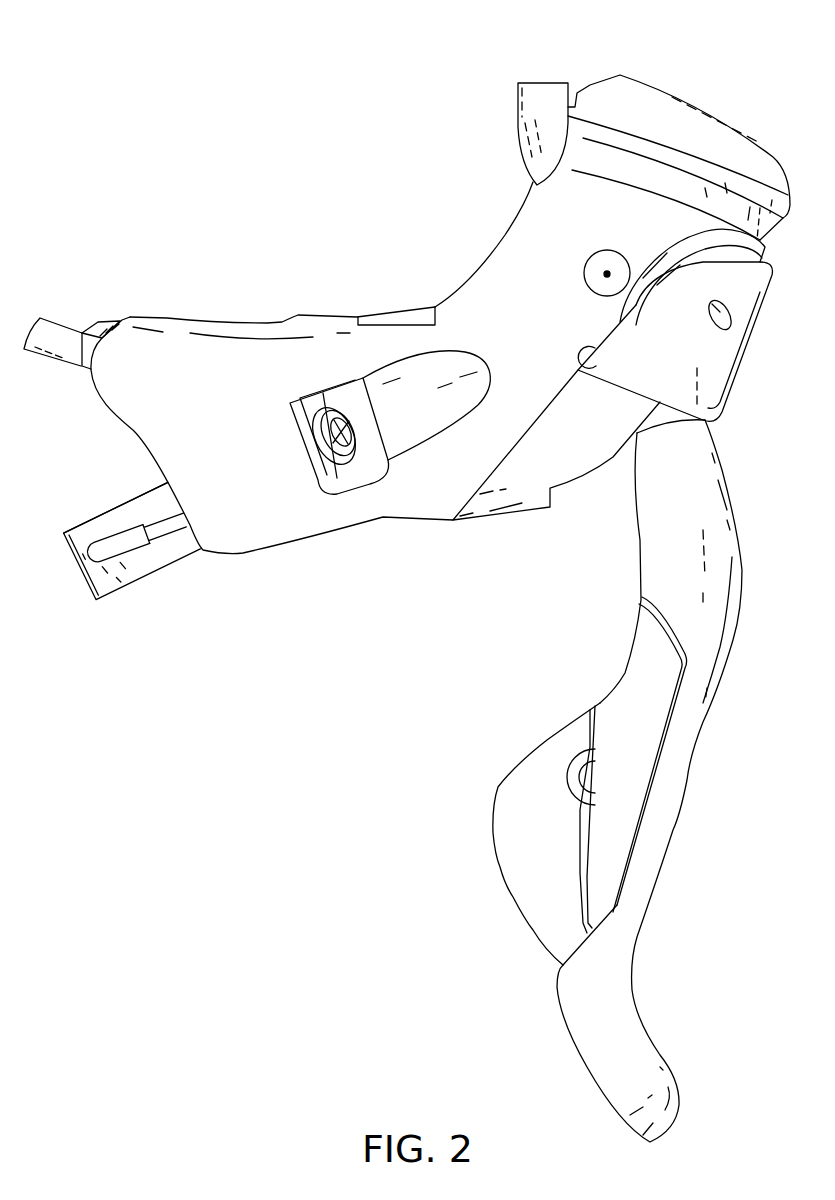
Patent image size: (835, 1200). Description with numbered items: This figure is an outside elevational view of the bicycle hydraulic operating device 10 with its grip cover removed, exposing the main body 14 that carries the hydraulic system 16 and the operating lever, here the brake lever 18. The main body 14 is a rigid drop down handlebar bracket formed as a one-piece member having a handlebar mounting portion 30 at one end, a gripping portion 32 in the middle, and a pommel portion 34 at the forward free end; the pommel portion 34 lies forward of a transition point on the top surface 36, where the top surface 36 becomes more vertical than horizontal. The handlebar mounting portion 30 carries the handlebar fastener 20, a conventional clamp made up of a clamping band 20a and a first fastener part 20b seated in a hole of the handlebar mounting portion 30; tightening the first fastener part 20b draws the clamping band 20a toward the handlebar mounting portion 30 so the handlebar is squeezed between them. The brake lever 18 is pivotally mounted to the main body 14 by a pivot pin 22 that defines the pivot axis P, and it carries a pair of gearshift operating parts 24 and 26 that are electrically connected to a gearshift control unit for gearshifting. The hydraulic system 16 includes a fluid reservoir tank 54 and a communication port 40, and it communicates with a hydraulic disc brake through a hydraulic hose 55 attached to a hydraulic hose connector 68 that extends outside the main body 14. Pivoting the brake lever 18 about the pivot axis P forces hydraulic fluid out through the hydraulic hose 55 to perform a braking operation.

The bicycle hydraulic operating device 10 is at (287, 170).
The main body 14 is at (497, 520).
The hydraulic system 16 is at (335, 293).
The brake lever 18 is at (712, 720).
The handlebar fastener 20 is at (140, 587).
The clamping band 20a is at (97, 517).
The first fastener part 20b is at (350, 455).
The pivot pin 22 is at (603, 258).
The pivot axis P is at (605, 276).
The gearshift operating part 24 is at (610, 832).
The gearshift operating part 26 is at (533, 870).
The handlebar mounting portion 30 is at (128, 433).
The gripping portion 32 is at (222, 320).
The pommel portion 34 is at (517, 182).
The top surface 36 is at (460, 284).
The communication port 40 is at (517, 108).
The fluid reservoir tank 54 is at (722, 92).
The hydraulic hose 55 is at (61, 328).
The hydraulic hose connector 68 is at (107, 318).